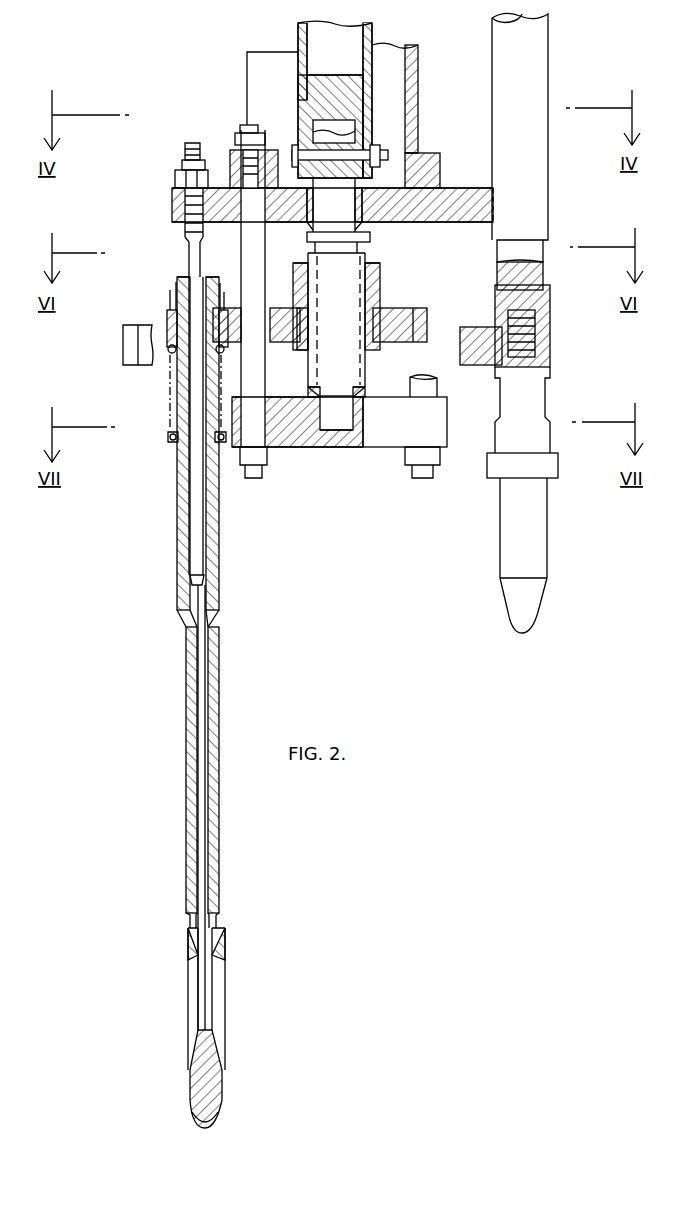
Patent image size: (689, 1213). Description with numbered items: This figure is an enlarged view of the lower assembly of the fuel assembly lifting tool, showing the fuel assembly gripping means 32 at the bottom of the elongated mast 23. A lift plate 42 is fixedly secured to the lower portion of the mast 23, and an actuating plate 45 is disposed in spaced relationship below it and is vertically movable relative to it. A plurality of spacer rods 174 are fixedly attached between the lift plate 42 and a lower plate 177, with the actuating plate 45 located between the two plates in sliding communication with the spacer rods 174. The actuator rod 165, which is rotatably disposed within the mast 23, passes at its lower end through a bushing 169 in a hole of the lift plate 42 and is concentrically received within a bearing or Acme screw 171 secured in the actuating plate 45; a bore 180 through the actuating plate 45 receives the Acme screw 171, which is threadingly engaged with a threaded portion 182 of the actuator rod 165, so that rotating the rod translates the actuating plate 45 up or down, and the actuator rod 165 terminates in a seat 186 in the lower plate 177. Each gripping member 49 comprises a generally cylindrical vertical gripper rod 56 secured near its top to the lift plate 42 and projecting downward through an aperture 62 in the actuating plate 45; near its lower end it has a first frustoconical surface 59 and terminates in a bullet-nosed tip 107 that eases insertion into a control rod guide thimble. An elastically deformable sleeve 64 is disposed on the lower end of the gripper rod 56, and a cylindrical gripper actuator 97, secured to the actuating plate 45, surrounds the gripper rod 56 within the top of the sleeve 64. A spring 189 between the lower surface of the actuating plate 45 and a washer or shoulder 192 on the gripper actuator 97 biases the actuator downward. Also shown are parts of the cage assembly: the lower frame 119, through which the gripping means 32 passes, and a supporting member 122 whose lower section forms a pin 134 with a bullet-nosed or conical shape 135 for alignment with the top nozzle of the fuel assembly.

The elongated mast 23 is at (412, 48).
The fuel assembly gripping means 32 is at (245, 88).
The lift plate 42 is at (463, 188).
The actuating plate 45 is at (405, 312).
The gripping member 49 is at (188, 745).
The gripper rod 56 is at (185, 154).
The first frustoconical surface 59 is at (225, 1072).
The aperture 62 is at (167, 322).
The sleeve 64 is at (222, 1000).
The gripper actuator 97 is at (180, 622).
The bullet-nosed tip 107 is at (215, 1122).
The lower frame 119 is at (118, 356).
The supporting member 122 is at (540, 58).
The pin 134 is at (540, 545).
The bullet-nosed or conical shape 135 is at (541, 605).
The actuator rod 165 is at (370, 240).
The bushing 169 is at (304, 230).
The Acme screw 171 is at (378, 290).
The spacer rod 174 is at (437, 386).
The lower plate 177 is at (370, 448).
The bore 180 is at (300, 345).
The threaded portion 182 is at (361, 375).
The seat 186 is at (312, 394).
The spring 189 is at (170, 353).
The washer or shoulder 192 is at (168, 440).